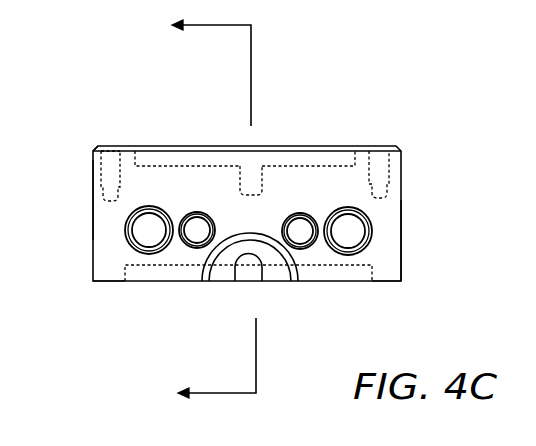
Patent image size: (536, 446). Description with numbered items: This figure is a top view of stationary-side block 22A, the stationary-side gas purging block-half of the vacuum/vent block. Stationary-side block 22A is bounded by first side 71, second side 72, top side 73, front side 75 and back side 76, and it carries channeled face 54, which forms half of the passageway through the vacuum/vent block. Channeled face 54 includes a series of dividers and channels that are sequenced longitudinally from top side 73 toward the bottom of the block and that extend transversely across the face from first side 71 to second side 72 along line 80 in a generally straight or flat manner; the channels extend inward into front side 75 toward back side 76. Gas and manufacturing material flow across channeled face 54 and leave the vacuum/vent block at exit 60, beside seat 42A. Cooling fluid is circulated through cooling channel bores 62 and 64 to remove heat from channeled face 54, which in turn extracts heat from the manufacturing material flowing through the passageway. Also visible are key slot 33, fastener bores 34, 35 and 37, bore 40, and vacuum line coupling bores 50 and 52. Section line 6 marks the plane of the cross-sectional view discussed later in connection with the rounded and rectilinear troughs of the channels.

The section line 6- 6 is at (204, 212).
The stationary-side block 22A is at (393, 223).
The key slot 33 is at (202, 150).
The fastener bore 34 is at (112, 164).
The fastener bore 35 is at (534, 25).
The fastener bore 37 is at (378, 162).
The bore 40 is at (256, 175).
The seat 42A is at (225, 275).
The vacuum line coupling bore 50 is at (200, 238).
The vacuum line coupling bore 52 is at (298, 237).
The channeled face 54 is at (150, 290).
The exit 60 is at (248, 275).
The cooling channel bore 62 is at (342, 221).
The cooling channel bore 64 is at (149, 240).
The first side 71 is at (93, 205).
The second side 72 is at (402, 246).
The top side 73 is at (385, 279).
The front side 75 is at (103, 282).
The back side 76 is at (110, 150).
The line 80 is at (374, 264).